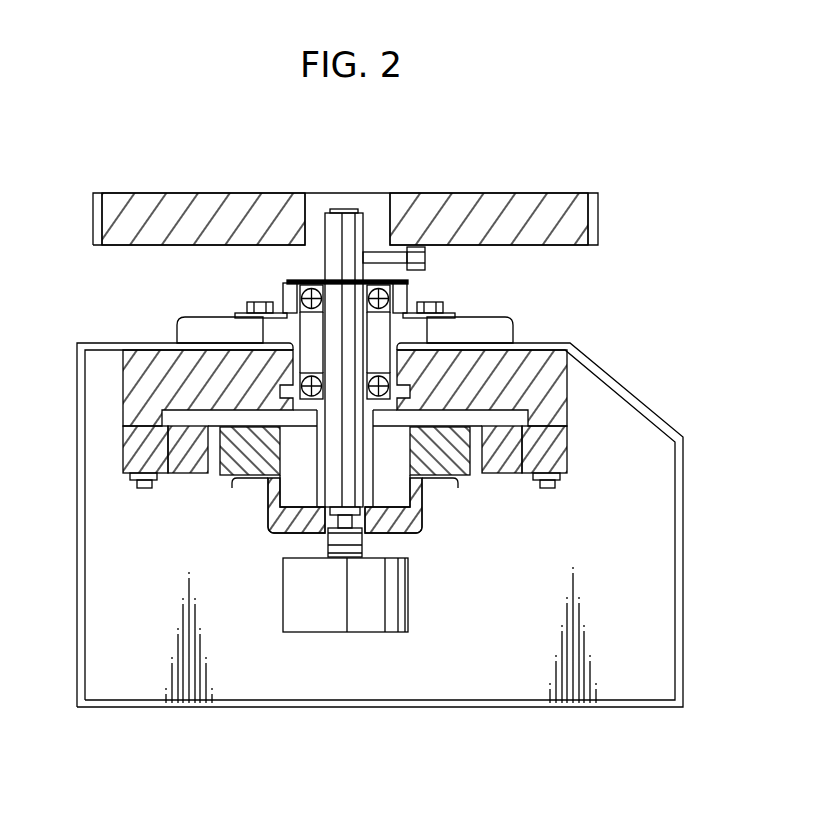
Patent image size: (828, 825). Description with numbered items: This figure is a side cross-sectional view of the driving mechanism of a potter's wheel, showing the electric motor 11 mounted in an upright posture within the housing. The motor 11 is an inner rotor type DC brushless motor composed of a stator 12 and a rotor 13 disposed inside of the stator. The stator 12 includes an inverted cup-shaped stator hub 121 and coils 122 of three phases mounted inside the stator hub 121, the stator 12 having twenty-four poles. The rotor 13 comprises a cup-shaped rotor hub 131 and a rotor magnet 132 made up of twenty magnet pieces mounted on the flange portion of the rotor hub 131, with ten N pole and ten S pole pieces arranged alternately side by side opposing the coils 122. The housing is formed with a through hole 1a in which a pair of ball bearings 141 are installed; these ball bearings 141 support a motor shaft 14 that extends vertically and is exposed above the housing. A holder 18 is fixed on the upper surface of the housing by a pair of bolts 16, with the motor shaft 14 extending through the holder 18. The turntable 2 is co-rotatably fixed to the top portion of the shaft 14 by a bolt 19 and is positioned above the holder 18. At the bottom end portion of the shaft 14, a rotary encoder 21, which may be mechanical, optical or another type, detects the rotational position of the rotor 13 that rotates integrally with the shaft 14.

The through hole 1a is at (305, 281).
The turntable 2 is at (535, 193).
The electric motor 11 is at (168, 504).
The stator 12 is at (410, 415).
The stator hub 121 is at (550, 373).
The coils 122 is at (508, 453).
The rotor 13 is at (343, 522).
The rotor hub 131 is at (275, 536).
The rotor magnet 132 is at (231, 480).
The motor shaft 14 is at (333, 257).
The ball bearings 141 is at (300, 376).
The bolts 16 is at (443, 306).
The holder 18 is at (498, 330).
The bolt 19 is at (436, 247).
The rotary encoder 21 is at (410, 594).